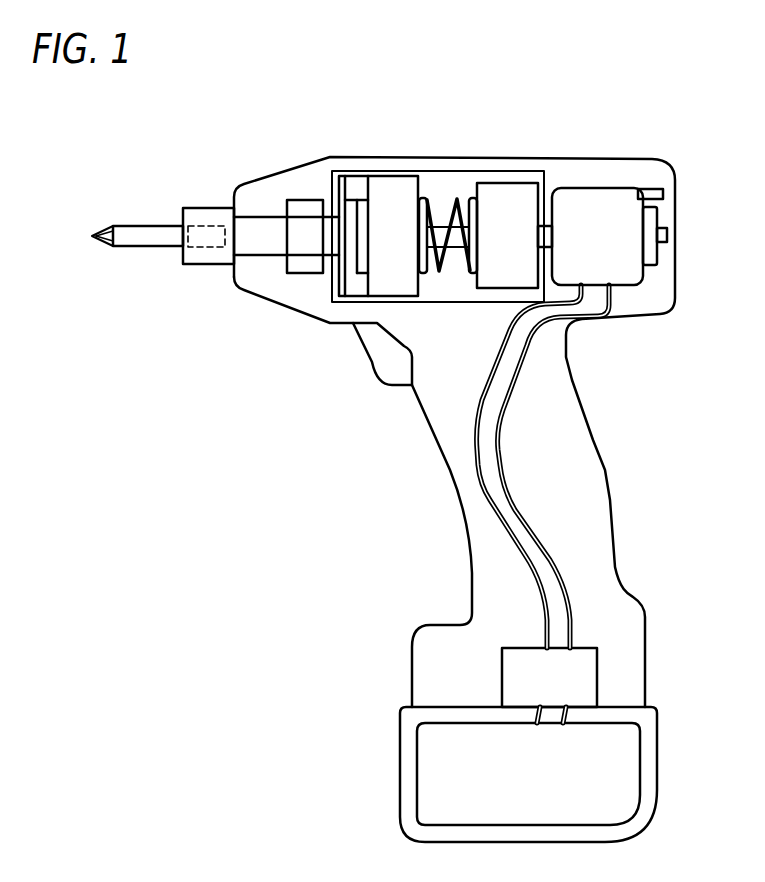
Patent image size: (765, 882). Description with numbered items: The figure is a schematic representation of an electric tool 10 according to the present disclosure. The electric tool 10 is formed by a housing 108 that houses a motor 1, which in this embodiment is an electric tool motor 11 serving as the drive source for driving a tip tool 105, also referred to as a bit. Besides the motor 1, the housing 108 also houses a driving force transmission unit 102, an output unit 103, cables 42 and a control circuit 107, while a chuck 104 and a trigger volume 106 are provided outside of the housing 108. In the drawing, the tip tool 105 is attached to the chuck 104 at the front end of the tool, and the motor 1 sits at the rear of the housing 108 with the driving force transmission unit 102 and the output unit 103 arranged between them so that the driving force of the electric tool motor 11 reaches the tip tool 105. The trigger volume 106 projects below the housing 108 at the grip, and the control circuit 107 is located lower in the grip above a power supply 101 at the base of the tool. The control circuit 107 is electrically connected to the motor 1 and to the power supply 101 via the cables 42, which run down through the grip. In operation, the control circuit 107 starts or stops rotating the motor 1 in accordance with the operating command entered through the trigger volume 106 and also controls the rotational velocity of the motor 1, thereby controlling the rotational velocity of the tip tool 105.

The electric tool 10 is at (156, 133).
The motor 1 is at (605, 197).
The electric tool motor 11 is at (602, 236).
The cables 42 is at (523, 497).
The power supply 101 is at (617, 767).
The driving force transmission unit 102 is at (448, 172).
The output unit 103 is at (265, 245).
The chuck 104 is at (210, 212).
The tip tool 105 is at (145, 230).
The trigger volume 106 is at (378, 353).
The control circuit 107 is at (590, 678).
The housing 108 is at (668, 310).